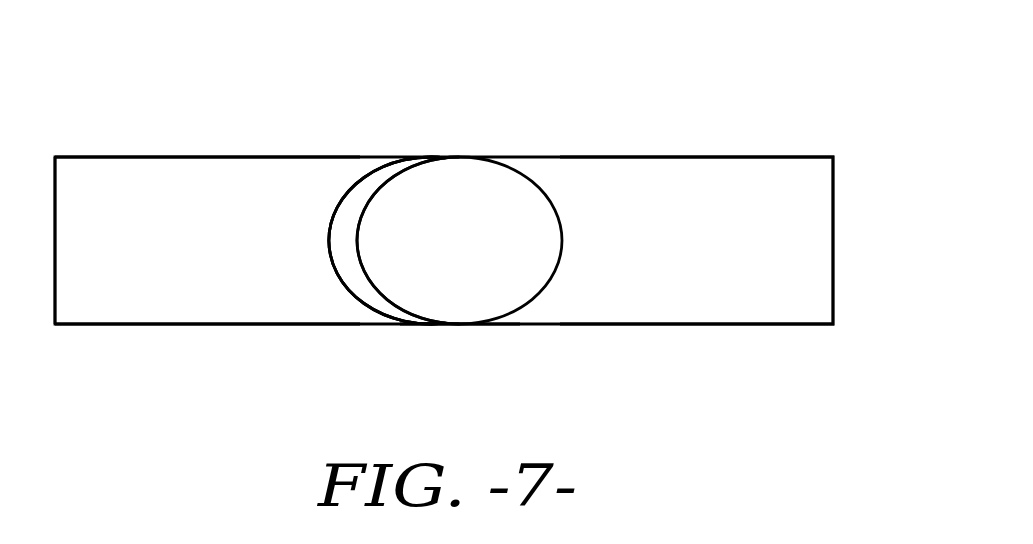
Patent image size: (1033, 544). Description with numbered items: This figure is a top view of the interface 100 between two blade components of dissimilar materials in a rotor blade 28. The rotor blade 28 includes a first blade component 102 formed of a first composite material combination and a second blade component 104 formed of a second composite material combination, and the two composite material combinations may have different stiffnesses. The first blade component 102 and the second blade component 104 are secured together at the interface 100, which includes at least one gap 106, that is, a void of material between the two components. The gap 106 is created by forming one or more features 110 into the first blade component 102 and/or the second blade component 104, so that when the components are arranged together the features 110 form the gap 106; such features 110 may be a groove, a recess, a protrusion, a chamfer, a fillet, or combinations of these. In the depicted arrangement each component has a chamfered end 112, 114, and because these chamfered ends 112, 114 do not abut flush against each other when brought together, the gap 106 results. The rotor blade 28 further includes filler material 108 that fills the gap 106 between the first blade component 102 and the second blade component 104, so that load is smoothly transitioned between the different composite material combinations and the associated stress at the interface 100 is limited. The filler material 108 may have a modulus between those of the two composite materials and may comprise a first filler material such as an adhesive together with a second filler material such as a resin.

The rotor blade 28 is at (650, 81).
The interface 100 is at (455, 150).
The first blade component 102 is at (196, 150).
The second blade component 104 is at (690, 150).
The gap 106 is at (395, 330).
The filler material 108 is at (367, 290).
The feature 110 is at (326, 265).
The chamfered end 112 is at (326, 265).
The chamfered end 114 is at (368, 189).